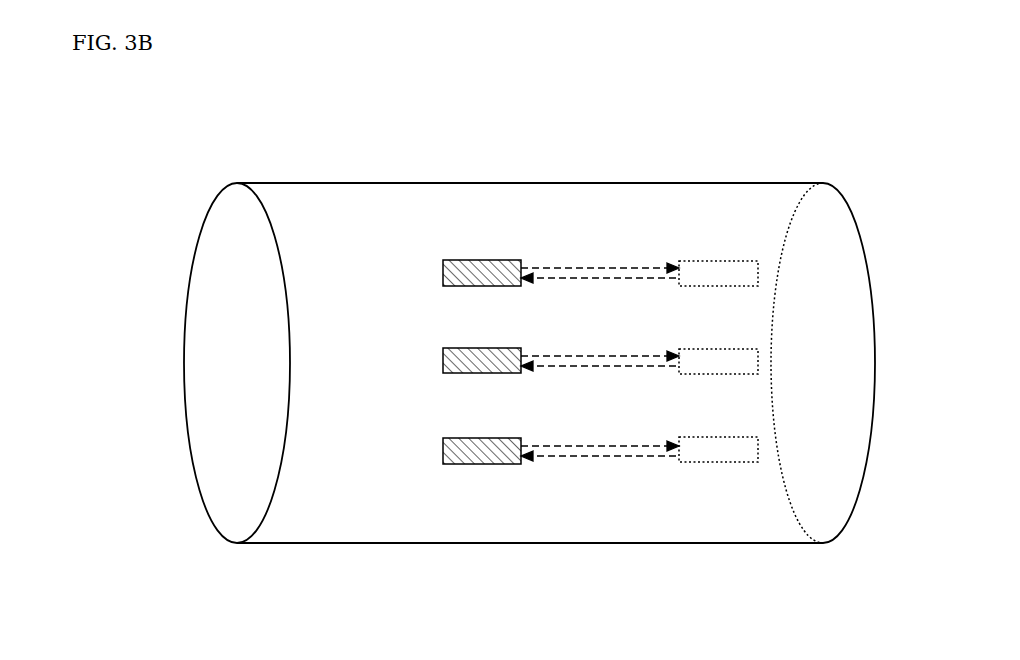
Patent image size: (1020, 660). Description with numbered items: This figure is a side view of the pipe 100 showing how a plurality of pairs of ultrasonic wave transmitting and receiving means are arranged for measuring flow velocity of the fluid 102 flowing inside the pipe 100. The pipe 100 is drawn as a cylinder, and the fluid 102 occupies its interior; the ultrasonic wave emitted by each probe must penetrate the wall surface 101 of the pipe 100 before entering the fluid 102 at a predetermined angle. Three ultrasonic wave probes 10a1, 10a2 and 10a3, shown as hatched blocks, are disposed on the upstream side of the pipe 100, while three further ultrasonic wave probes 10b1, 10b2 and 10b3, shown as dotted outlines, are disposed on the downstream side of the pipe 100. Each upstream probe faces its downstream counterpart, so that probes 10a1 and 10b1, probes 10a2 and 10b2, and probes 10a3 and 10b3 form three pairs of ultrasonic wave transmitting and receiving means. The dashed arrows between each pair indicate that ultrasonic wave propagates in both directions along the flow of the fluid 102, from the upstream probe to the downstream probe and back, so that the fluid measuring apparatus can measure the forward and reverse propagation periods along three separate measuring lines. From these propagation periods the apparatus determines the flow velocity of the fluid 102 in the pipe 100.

The pipe 100 is at (713, 192).
The wall surface 101 is at (420, 545).
The fluid 102 is at (225, 317).
The ultrasonic wave probe 10a1 is at (492, 260).
The ultrasonic wave probe 10a2 is at (496, 348).
The ultrasonic wave probe 10a3 is at (496, 438).
The ultrasonic wave probe 10b1 is at (733, 261).
The ultrasonic wave probe 10b2 is at (730, 349).
The ultrasonic wave probe 10b3 is at (727, 437).